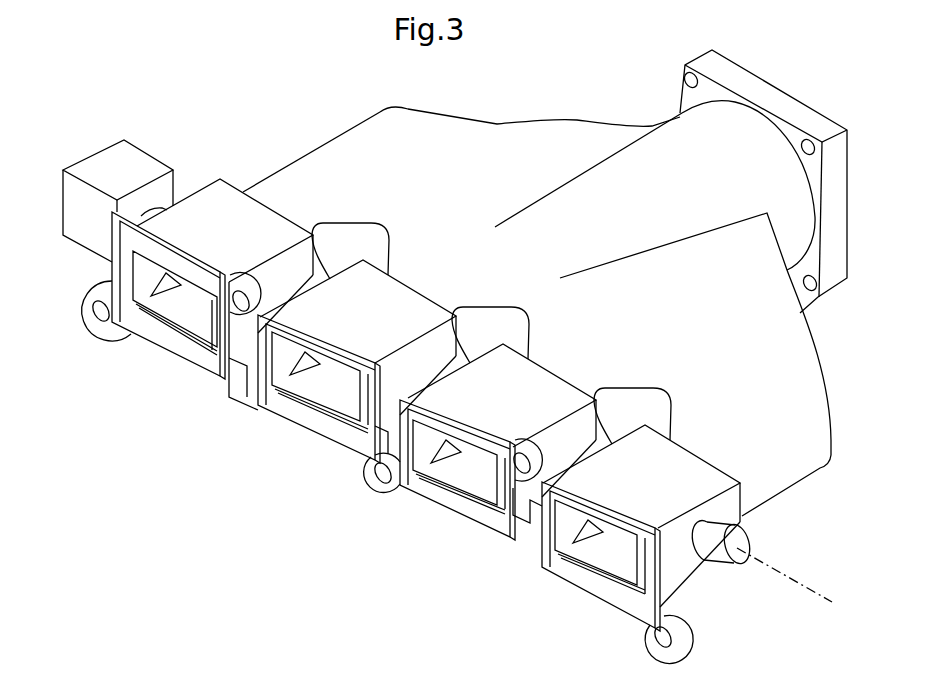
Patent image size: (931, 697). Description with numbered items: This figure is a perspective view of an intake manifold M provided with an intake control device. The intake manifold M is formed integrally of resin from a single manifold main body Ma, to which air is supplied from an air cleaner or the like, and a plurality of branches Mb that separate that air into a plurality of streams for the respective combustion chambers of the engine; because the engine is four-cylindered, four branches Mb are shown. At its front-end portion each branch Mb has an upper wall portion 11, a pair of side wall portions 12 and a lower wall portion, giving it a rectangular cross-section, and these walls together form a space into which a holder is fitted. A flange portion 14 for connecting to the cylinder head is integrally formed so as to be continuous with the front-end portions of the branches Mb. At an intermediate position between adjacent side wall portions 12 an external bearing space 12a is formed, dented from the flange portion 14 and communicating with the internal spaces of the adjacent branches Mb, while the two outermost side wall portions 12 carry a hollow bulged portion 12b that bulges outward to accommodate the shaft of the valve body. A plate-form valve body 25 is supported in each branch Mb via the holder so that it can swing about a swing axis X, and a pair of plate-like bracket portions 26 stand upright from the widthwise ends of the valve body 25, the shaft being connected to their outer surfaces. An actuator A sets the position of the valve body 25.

The intake manifold M is at (333, 132).
The manifold main body Ma is at (503, 148).
The branch Mb is at (283, 193).
The actuator A is at (115, 158).
The upper wall portion 11 is at (193, 208).
The side wall portion 12 is at (692, 583).
The external bearing space 12a is at (245, 348).
The hollow bulged portion 12b is at (750, 542).
The flange portion 14 is at (85, 315).
The valve body 25 is at (145, 317).
The bracket portion 26 is at (167, 280).
The swing axis X is at (795, 585).